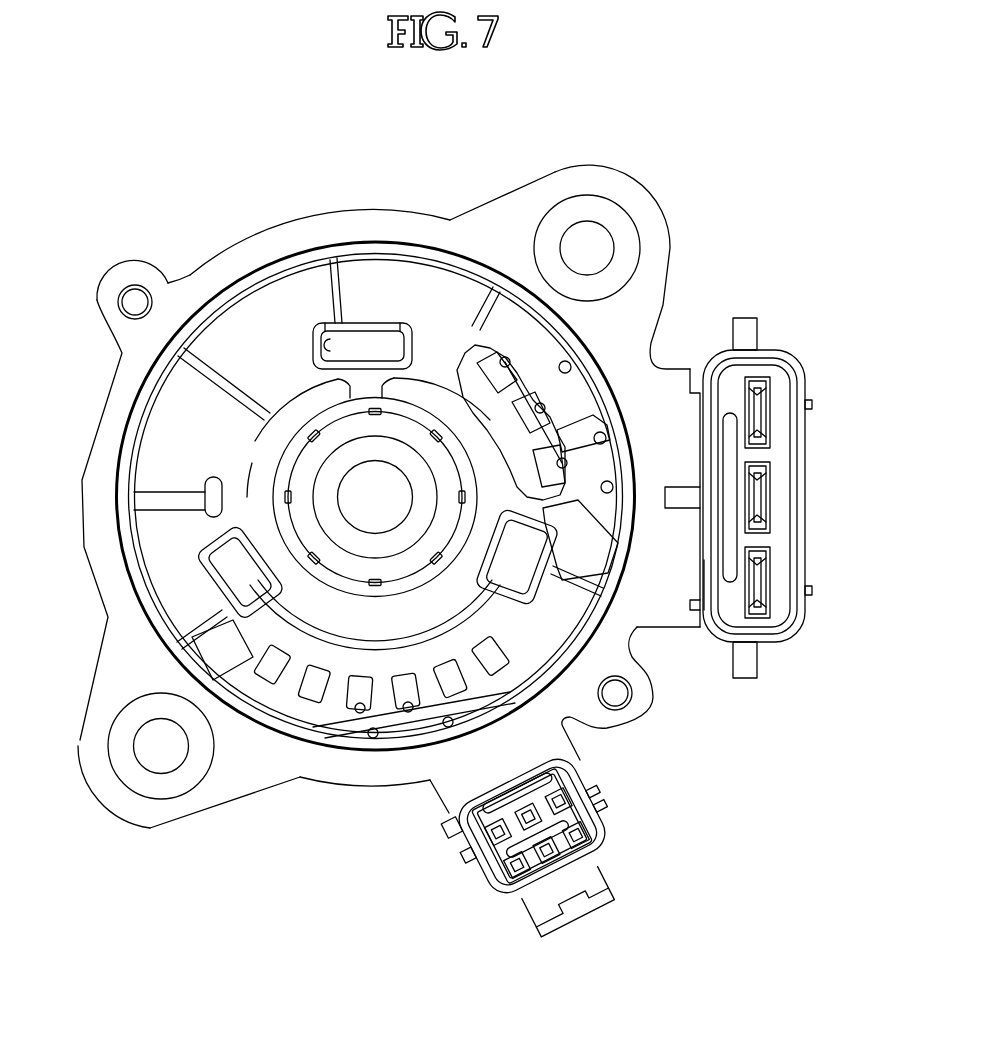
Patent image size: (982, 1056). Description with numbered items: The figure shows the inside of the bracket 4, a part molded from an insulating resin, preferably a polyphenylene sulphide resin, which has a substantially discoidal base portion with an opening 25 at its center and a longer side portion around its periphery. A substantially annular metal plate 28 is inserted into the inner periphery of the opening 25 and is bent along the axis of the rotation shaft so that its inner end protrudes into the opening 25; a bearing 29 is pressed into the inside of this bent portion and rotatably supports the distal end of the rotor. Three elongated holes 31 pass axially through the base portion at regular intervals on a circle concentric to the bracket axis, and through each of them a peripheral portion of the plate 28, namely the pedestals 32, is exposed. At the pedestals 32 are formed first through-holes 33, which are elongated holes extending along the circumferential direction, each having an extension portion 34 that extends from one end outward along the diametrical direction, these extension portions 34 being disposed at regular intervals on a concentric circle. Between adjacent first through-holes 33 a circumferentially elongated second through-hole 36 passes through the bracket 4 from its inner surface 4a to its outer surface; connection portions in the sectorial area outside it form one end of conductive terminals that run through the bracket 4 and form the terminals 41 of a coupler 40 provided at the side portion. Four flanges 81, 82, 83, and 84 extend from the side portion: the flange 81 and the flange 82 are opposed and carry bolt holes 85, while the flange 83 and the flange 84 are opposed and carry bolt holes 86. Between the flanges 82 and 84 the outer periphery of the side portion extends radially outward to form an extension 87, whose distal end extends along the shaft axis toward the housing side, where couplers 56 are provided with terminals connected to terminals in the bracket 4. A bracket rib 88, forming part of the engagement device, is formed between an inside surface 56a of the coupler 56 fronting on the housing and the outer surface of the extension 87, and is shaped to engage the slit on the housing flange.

The bracket 4 is at (408, 211).
The inner surface 4a is at (246, 323).
The opening 25 is at (375, 497).
The plate 28 is at (130, 453).
The bearing 29 is at (237, 467).
The elongated holes 31 is at (405, 335).
The pedestals 32 is at (365, 325).
The first through-holes 33 is at (342, 310).
The extension portion 34 is at (313, 340).
The second through-hole 36 is at (310, 693).
The coupler 40 is at (505, 898).
The terminals 41 is at (593, 835).
The couplers 56 is at (770, 423).
The inside surface 56a is at (702, 575).
The flange 81 is at (178, 815).
The flange 82 is at (563, 167).
The flange 83 is at (140, 278).
The flange 84 is at (632, 715).
The bolt holes 85 is at (612, 247).
The bolt holes 86 is at (125, 300).
The extension 87 is at (692, 368).
The bracket rib 88 is at (678, 383).